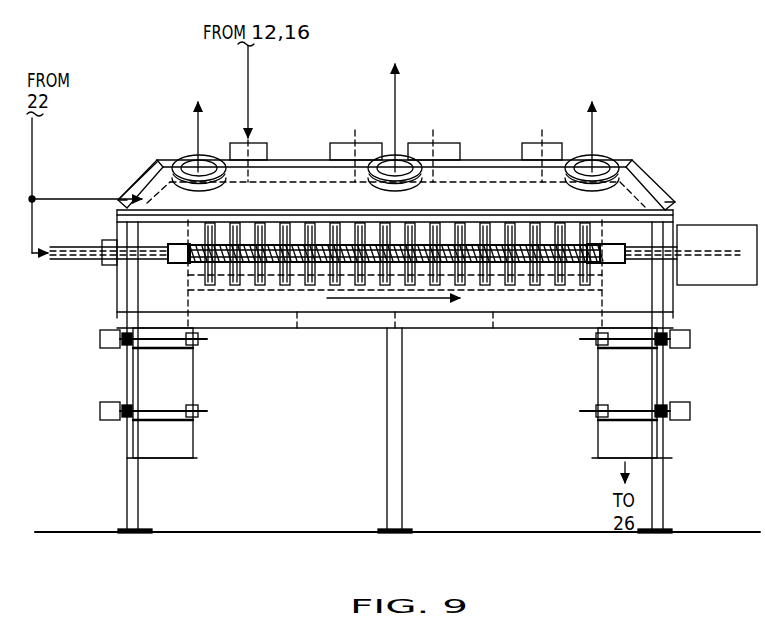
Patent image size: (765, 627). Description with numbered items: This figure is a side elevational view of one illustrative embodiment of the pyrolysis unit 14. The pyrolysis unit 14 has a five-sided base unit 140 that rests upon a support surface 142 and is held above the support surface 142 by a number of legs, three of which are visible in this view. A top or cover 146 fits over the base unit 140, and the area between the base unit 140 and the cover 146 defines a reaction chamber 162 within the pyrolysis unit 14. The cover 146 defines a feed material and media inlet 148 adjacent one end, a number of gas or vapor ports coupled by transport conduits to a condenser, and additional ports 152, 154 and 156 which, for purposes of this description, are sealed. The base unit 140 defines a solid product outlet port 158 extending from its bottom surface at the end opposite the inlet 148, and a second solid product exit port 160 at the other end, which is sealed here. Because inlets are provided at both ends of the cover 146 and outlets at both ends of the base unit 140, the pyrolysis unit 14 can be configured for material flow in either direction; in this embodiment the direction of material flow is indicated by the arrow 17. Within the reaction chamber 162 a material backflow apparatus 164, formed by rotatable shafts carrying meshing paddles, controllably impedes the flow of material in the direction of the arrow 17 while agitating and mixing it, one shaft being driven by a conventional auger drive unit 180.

The pyrolysis unit 14 is at (630, 79).
The arrow 17 is at (417, 302).
The base unit 140 is at (545, 313).
The support surface 142 is at (285, 534).
The cover 146 is at (130, 186).
The feed material and media inlet 148 is at (238, 141).
The additional port 152 is at (341, 142).
The additional port 154 is at (448, 142).
The additional port 156 is at (553, 142).
The solid product outlet port 158 is at (598, 445).
The second solid product exit port 160 is at (193, 443).
The reaction chamber 162 is at (156, 185).
The material backflow apparatus 164 is at (299, 289).
The auger drive unit 180 is at (712, 287).